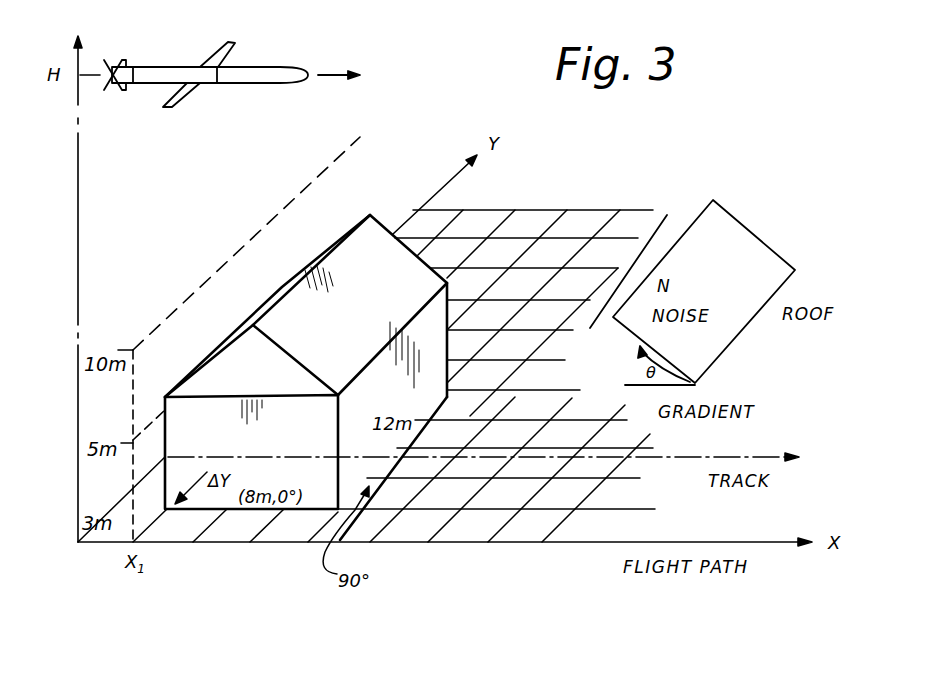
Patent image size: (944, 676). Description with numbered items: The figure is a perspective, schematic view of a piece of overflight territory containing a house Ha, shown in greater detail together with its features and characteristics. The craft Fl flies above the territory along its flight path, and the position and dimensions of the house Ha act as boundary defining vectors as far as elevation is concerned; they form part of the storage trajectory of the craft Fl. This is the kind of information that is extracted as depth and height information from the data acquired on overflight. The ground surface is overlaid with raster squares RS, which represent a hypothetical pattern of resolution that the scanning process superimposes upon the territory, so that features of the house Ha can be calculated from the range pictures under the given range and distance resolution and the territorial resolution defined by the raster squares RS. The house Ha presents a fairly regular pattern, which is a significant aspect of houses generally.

The craft FL is at (208, 86).
The house HA is at (393, 268).
The raster squares RS is at (493, 493).